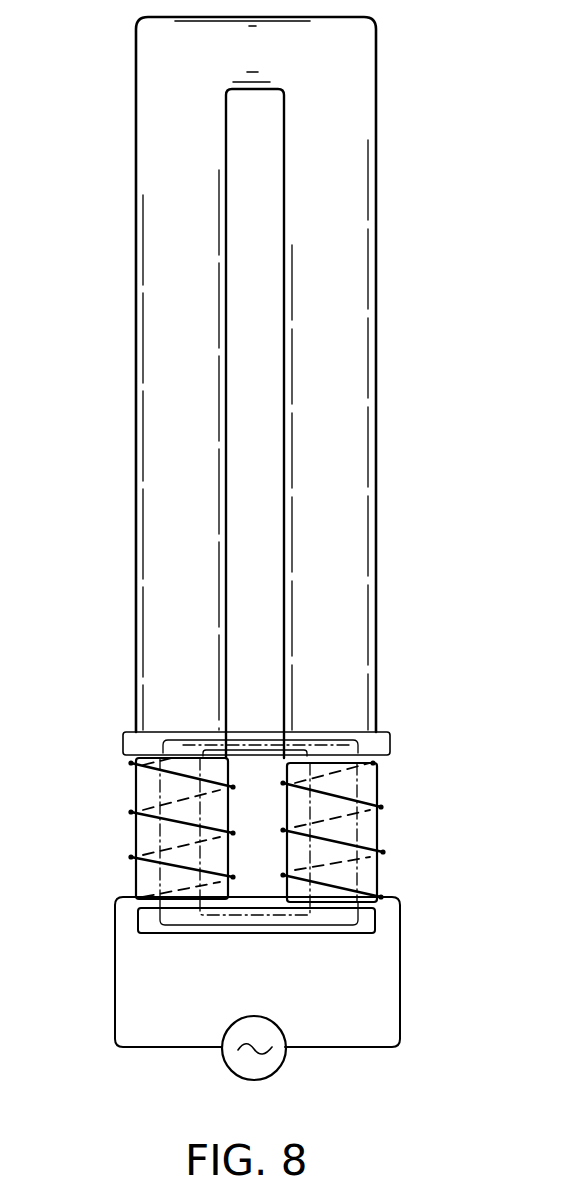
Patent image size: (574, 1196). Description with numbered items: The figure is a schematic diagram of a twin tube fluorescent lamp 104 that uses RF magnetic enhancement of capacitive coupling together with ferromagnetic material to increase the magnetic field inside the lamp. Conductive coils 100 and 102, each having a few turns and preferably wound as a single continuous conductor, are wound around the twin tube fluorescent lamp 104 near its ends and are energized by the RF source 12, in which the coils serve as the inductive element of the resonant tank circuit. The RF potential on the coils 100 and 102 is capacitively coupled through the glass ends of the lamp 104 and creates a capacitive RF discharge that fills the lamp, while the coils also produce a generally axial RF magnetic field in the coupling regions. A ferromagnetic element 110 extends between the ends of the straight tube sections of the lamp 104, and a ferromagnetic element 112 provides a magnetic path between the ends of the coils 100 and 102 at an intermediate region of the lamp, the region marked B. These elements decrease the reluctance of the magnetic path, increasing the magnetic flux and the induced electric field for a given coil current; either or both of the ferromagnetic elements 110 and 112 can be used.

The twin tube fluorescent lamp 104 is at (363, 612).
The inner tube / bulb B is at (248, 733).
The ferromagnetic element 112 is at (355, 727).
The conductive coil 100 is at (133, 862).
The conductive coil 102 is at (342, 842).
The ferromagnetic element 110 is at (360, 930).
The RF source 12 is at (227, 1027).